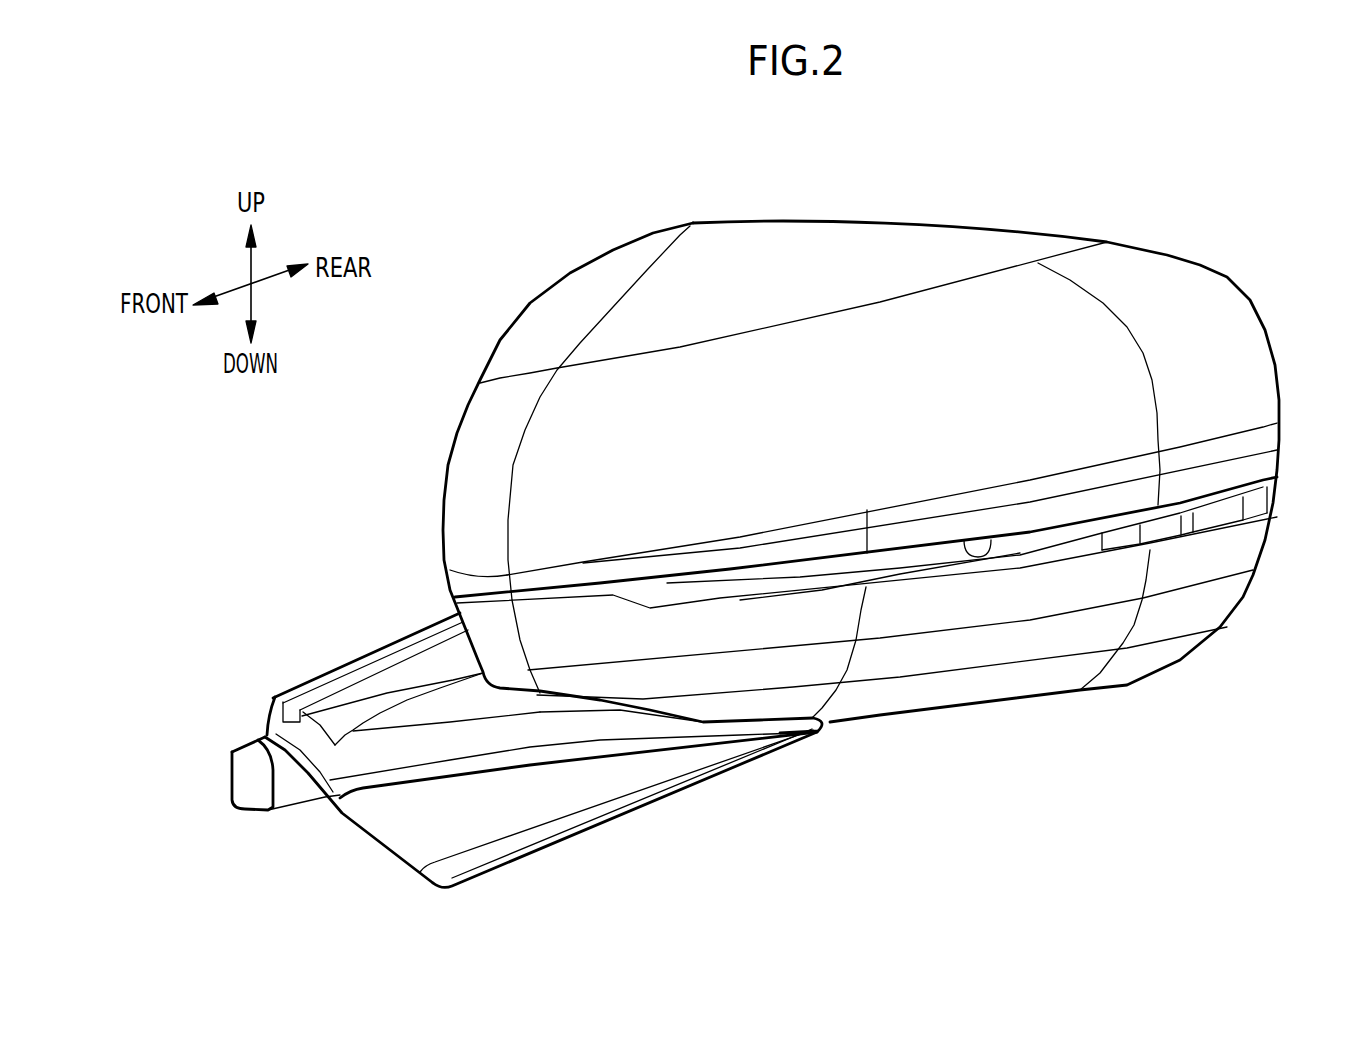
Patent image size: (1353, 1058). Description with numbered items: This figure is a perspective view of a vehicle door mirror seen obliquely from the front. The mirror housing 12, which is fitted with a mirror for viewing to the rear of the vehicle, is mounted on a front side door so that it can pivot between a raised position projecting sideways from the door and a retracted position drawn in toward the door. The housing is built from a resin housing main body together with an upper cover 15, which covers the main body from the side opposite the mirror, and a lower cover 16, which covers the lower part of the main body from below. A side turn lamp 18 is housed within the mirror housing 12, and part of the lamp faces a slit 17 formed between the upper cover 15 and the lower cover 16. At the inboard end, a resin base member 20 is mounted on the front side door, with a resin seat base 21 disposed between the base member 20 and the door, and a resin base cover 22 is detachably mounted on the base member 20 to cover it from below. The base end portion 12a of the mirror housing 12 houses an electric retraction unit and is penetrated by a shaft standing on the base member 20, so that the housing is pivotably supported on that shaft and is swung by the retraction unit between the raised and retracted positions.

The mirror housing 12 is at (1227, 278).
The base end portion 12a is at (637, 677).
The upper cover 15 is at (888, 257).
The lower cover 16 is at (1013, 692).
The slit 17 is at (992, 538).
The side turn lamp 18 is at (1072, 545).
The base member 20 is at (447, 707).
The seat base 21 is at (303, 690).
The base cover 22 is at (538, 827).